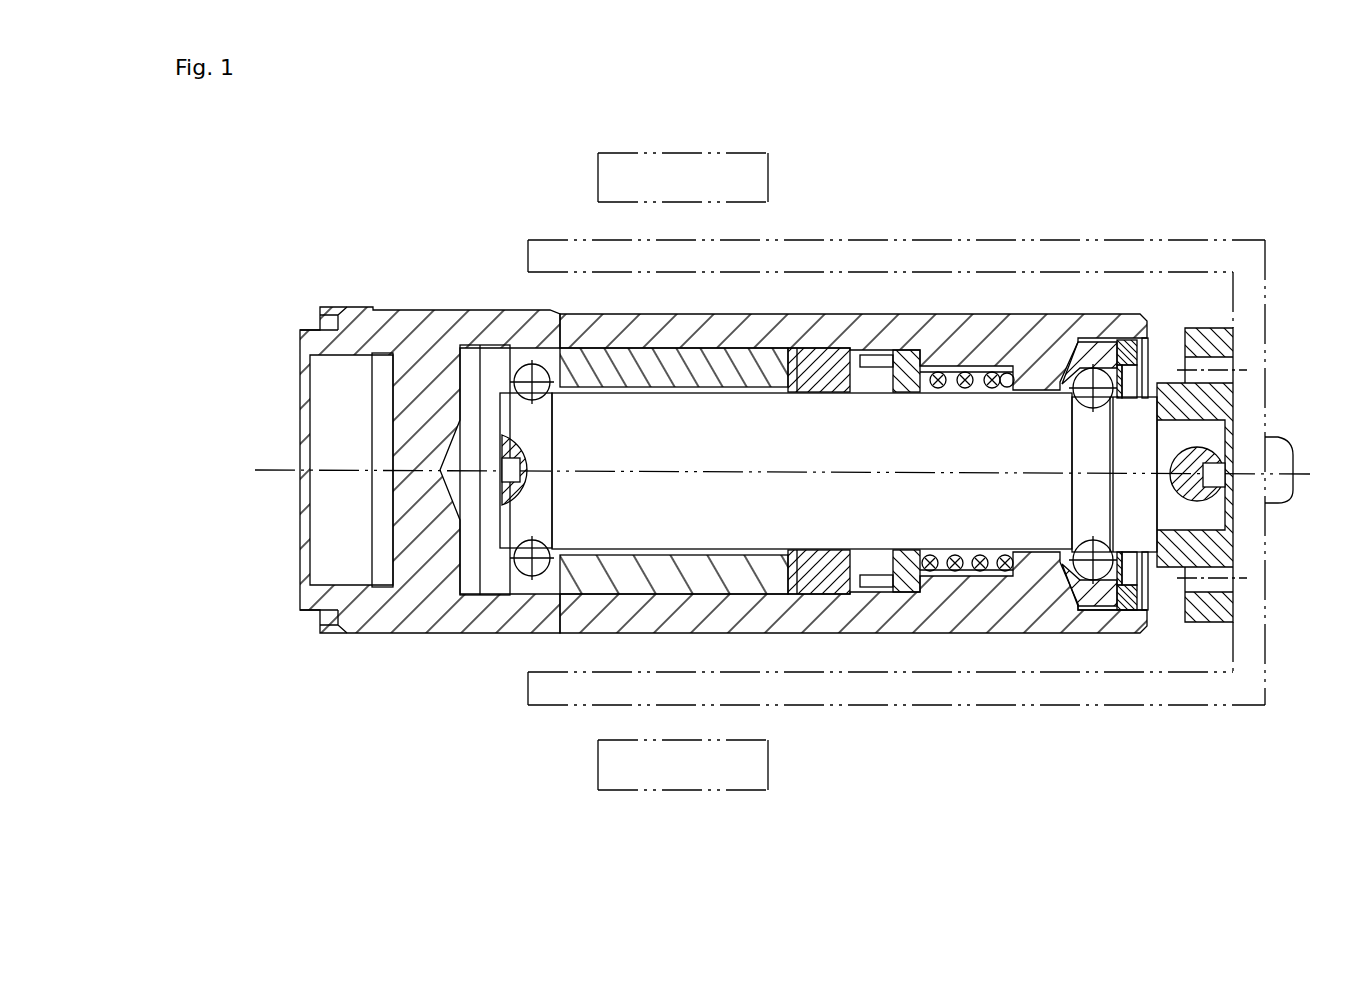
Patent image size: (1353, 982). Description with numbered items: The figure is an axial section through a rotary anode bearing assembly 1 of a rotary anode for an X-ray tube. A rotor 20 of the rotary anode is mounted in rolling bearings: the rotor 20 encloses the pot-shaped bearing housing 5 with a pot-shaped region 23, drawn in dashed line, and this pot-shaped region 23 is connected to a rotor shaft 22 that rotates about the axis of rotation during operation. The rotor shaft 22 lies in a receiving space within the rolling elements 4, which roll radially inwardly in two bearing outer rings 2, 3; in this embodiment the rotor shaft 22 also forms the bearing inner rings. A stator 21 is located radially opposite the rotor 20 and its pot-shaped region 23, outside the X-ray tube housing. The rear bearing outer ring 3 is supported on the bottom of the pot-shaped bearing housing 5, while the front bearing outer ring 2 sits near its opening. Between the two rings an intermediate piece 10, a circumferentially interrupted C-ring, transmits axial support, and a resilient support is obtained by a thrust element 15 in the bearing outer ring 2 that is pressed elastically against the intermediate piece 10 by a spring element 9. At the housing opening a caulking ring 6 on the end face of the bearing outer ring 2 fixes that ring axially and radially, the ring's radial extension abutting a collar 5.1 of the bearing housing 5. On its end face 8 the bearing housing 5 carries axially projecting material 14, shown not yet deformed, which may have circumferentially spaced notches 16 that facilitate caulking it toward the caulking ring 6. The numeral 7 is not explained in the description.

The rotary anode bearing assembly 1 is at (1013, 640).
The bearing outer ring 2 is at (1028, 363).
The bearing outer ring 3 is at (753, 373).
The rolling elements 4 is at (525, 362).
The bearing housing 5 is at (420, 328).
The collar 5.1 is at (1082, 601).
The caulking ring 6 is at (1130, 355).
The connecting flange 7 is at (1178, 328).
The end face 8 is at (1147, 348).
The spring element 9 is at (937, 370).
The intermediate piece 10 is at (817, 377).
The axially projecting material 14 is at (1148, 572).
The thrust element 15 is at (907, 587).
The notches 16 is at (1153, 577).
The rotor 20 is at (1215, 640).
The stator 21 is at (613, 180).
The rotor shaft 22 is at (580, 508).
The pot-shaped region 23 is at (553, 253).